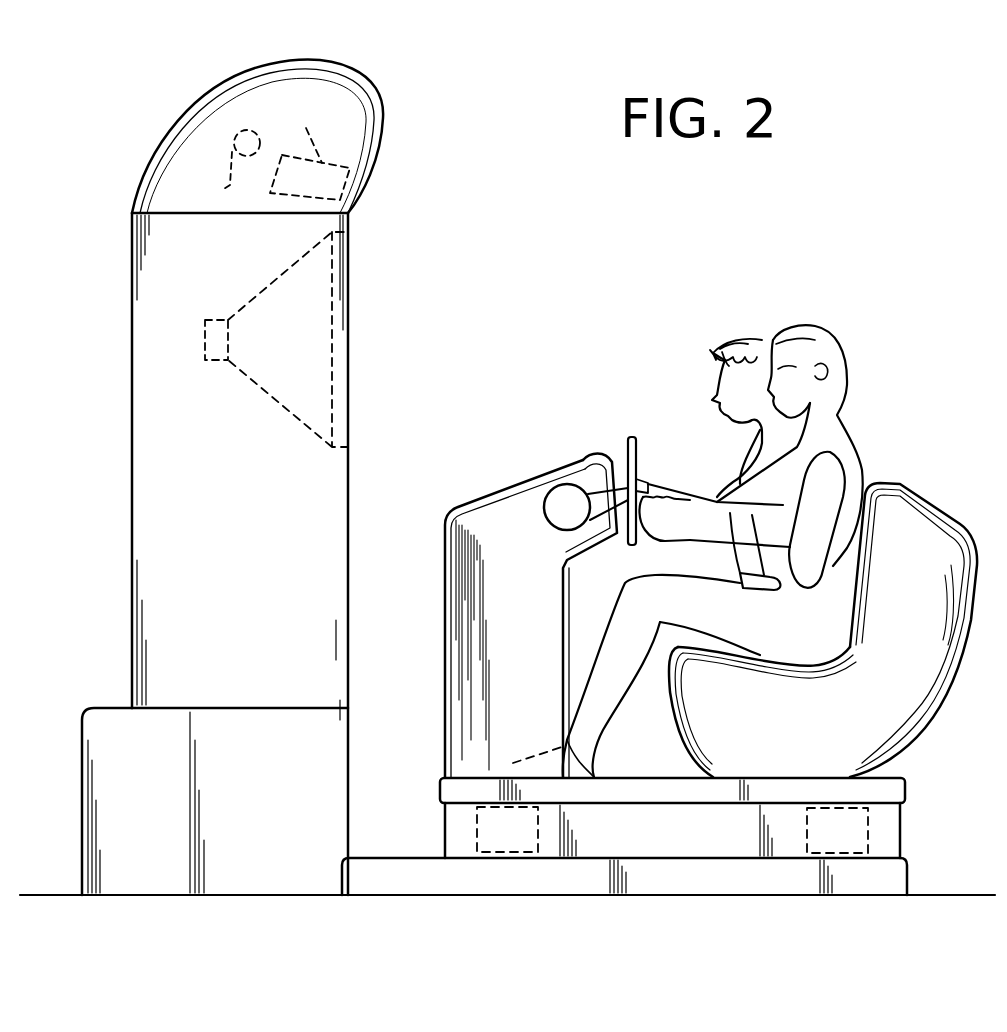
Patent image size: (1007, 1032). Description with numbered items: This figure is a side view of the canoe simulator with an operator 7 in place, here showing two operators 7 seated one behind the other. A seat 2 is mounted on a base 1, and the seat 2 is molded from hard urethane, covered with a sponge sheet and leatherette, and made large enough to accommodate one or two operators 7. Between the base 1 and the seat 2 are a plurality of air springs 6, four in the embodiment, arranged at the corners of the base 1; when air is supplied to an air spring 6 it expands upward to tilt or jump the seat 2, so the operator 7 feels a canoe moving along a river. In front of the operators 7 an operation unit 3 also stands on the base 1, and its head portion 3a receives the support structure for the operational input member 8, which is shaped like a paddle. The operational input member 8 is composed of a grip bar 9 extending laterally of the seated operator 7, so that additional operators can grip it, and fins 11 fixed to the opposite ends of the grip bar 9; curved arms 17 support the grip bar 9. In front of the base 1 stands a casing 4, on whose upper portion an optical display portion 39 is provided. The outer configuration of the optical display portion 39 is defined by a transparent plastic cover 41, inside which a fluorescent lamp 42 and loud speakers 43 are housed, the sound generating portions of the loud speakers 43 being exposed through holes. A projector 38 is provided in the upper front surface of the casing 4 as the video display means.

The base 1 is at (670, 878).
The seat 2 is at (930, 512).
The operation unit 3 is at (528, 582).
The head portion 3a is at (475, 503).
The casing 4 is at (132, 462).
The air spring 6 is at (478, 832).
The operator 7 is at (813, 340).
The operational input member 8 is at (687, 377).
The grip bar 9 is at (654, 478).
The fin 11 is at (630, 437).
The curved arm 17 is at (572, 537).
The projector 38 is at (345, 383).
The optical display portion 39 is at (290, 131).
The transparent plastic cover 41 is at (183, 113).
The fluorescent lamp 42 is at (224, 171).
The loud speaker 43 is at (310, 147).